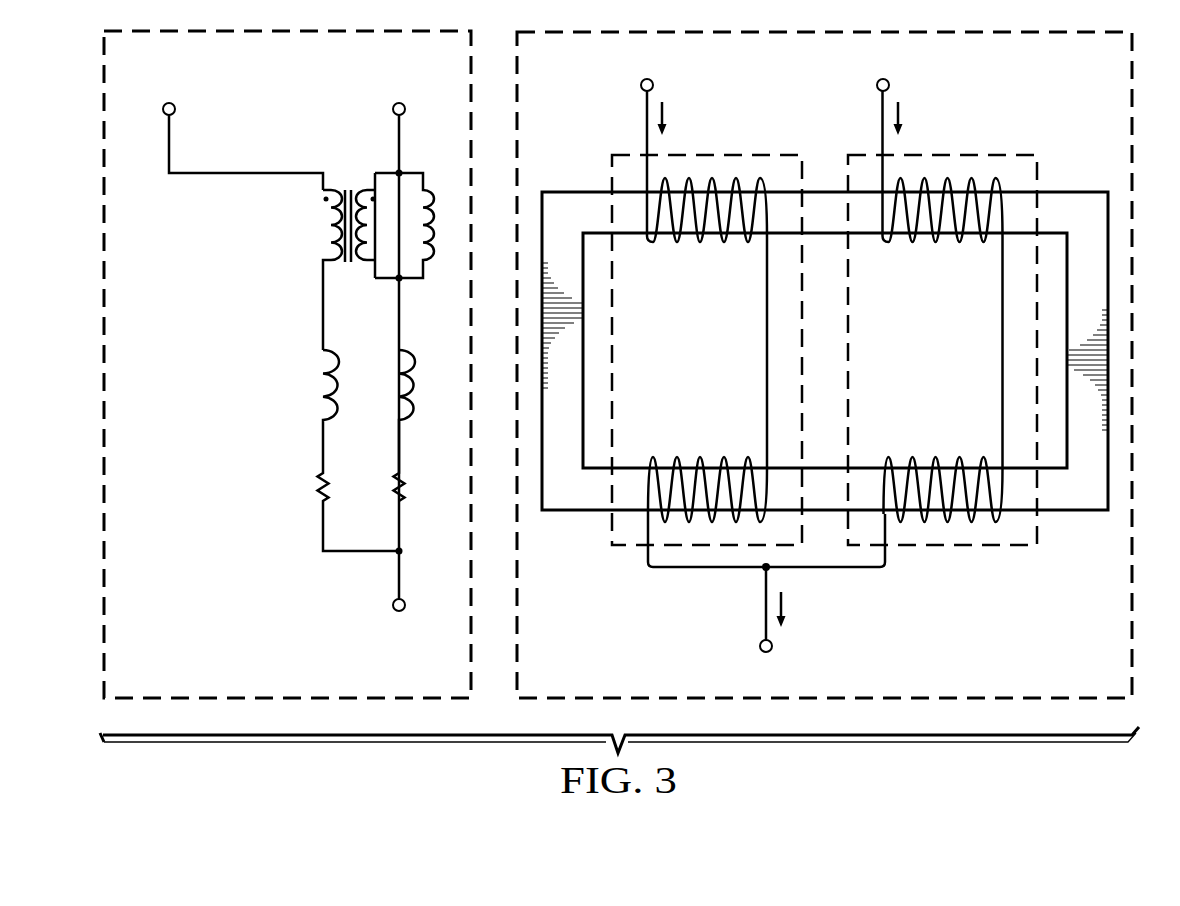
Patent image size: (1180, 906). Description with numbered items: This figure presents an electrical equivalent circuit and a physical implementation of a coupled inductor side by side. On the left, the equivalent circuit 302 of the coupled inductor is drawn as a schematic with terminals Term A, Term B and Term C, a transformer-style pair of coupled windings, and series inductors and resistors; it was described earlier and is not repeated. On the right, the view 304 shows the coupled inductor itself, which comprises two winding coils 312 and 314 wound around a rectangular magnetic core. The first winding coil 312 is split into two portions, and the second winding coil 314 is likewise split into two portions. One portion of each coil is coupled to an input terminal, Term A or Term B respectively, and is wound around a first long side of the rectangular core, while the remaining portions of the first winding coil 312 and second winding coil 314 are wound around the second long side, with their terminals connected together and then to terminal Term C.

The equivalent circuit 302 is at (245, 432).
The view 304 is at (977, 640).
The first winding coil 312 is at (707, 153).
The second winding coil 314 is at (945, 153).